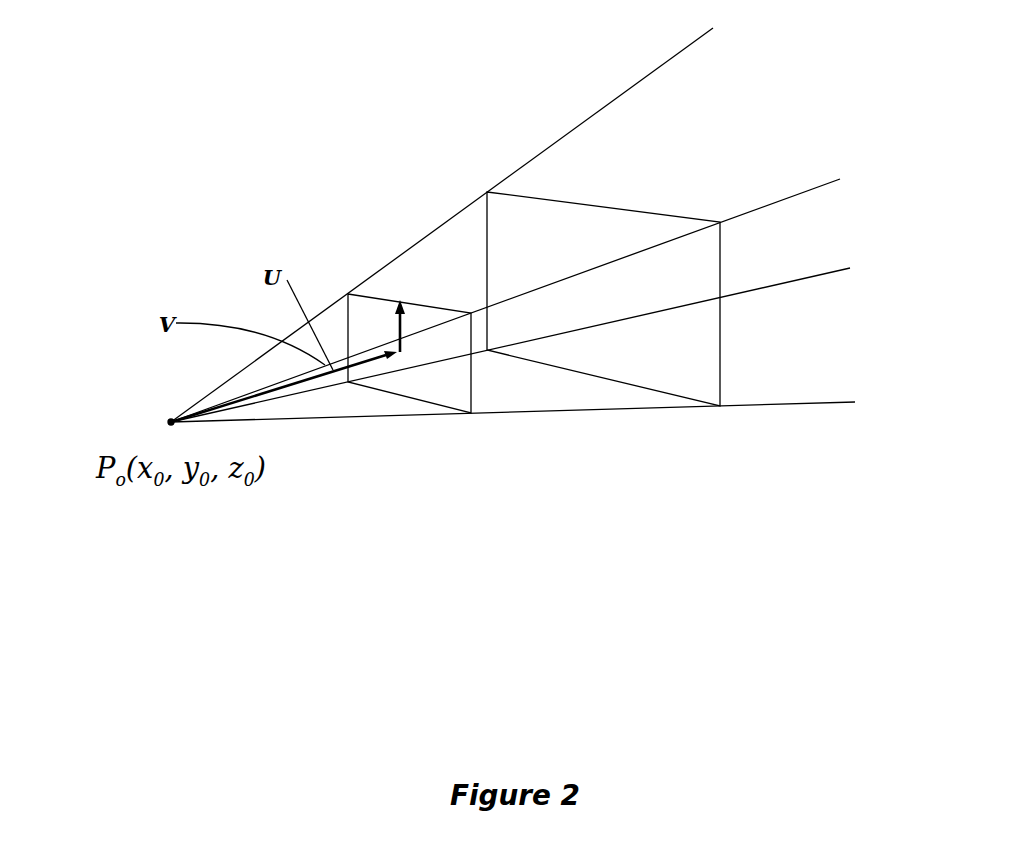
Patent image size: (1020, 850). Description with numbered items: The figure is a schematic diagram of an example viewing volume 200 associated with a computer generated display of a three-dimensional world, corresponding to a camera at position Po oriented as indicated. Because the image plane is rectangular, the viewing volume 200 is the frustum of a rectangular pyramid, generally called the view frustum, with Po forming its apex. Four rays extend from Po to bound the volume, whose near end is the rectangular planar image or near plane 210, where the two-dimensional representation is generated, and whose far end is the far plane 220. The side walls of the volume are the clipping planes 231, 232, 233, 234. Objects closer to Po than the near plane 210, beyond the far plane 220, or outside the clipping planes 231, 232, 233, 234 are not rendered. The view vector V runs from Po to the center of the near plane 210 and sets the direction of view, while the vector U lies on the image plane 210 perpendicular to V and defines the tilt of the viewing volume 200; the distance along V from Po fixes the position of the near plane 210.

The viewing volume 200 is at (490, 165).
The image plane 210 is at (422, 388).
The far plane 220 is at (665, 355).
The clipping plane 231 is at (443, 243).
The clipping plane 232 is at (575, 387).
The clipping plane 233 is at (505, 395).
The clipping plane 234 is at (395, 283).